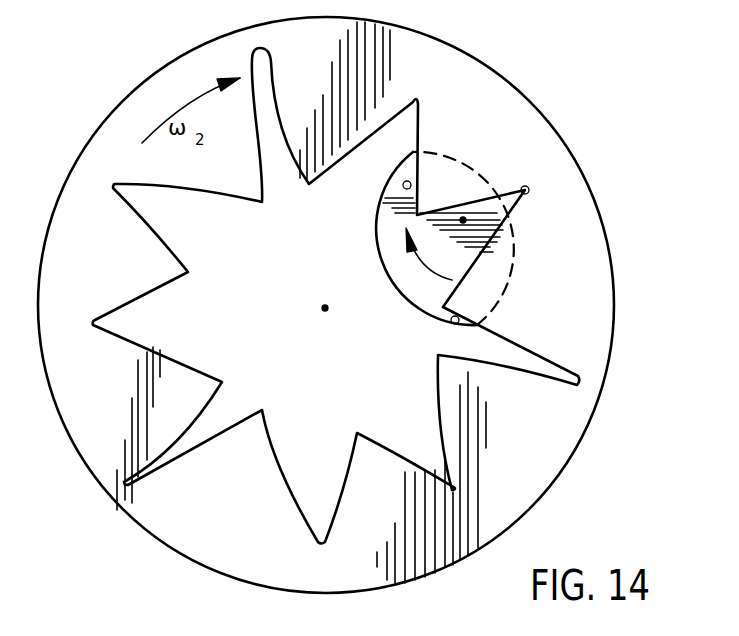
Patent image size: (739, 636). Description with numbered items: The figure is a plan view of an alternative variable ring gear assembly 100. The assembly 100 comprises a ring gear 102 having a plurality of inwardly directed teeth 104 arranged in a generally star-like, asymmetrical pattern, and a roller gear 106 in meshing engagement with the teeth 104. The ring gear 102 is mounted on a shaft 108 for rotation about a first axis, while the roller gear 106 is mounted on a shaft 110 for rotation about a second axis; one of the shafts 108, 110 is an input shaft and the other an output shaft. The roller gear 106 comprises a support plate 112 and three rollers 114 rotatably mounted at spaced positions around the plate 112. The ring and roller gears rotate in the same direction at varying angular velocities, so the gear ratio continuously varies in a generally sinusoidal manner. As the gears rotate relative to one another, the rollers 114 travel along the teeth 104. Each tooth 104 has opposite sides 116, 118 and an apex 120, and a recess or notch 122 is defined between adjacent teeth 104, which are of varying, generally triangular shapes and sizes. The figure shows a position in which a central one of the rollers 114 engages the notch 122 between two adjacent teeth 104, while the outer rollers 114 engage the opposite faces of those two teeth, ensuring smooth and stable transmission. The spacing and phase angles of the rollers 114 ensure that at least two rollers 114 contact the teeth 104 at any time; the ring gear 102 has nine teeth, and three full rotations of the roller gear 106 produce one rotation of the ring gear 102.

The ring gear assembly 100 is at (355, 305).
The ring gear 102 is at (562, 417).
The inwardly directed teeth 104 is at (233, 178).
The roller gear 106 is at (485, 266).
The shaft 108 is at (325, 308).
The shaft 110 is at (463, 220).
The support plate 112 is at (374, 250).
The rollers 114 is at (403, 186).
The tooth side 116 is at (233, 432).
The tooth side 118 is at (497, 357).
The apex 120 is at (223, 382).
The notch 122 is at (417, 100).